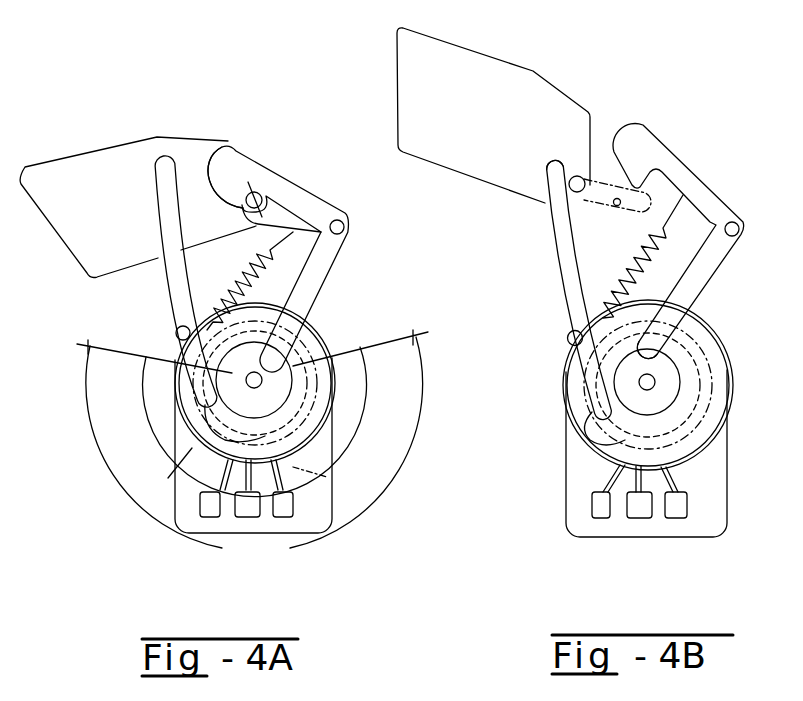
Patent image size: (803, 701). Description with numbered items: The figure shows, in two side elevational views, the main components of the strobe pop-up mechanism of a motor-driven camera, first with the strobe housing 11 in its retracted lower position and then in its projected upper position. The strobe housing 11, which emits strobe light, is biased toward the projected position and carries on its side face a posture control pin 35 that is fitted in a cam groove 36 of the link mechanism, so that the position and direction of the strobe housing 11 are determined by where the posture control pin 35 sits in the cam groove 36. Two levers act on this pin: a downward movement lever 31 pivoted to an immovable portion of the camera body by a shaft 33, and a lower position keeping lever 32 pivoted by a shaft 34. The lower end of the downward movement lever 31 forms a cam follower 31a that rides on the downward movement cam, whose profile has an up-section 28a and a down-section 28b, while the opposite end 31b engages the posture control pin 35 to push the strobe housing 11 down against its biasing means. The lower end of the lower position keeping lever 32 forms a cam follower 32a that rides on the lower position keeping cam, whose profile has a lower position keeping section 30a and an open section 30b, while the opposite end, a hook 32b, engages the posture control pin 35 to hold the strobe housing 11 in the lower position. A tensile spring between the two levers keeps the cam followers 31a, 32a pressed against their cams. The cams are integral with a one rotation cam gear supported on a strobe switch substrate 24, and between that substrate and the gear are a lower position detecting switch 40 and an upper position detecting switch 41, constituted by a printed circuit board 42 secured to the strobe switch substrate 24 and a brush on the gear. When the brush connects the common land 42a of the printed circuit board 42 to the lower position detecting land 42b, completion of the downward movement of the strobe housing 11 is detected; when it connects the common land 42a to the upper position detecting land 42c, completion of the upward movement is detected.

In FIG. 4A, the strobe housing 11 is at (97, 160).
In FIG. 4B, the strobe housing 11 is at (562, 110).
In FIG. 4A, the strobe switch substrate 24 is at (318, 512).
In FIG. 4B, the strobe switch substrate 24 is at (710, 492).
In FIG. 4A, the up-section 28a is at (222, 400).
In FIG. 4A, the down-section 28b is at (360, 376).
In FIG. 4A, the lower position keeping section 30a is at (237, 280).
In FIG. 4A, the open section 30b is at (254, 448).
In FIG. 4A, the downward movement lever 31 is at (167, 215).
In FIG. 4B, the downward movement lever 31 is at (563, 282).
In FIG. 4B, the cam follower 31a is at (580, 425).
In FIG. 4B, the opposite end 31b is at (547, 180).
In FIG. 4A, the lower position keeping lever 32 is at (323, 208).
In FIG. 4B, the lower position keeping lever 32 is at (723, 203).
In FIG. 4B, the cam follower 32a is at (700, 322).
In FIG. 4A, the hook 32b is at (245, 165).
In FIG. 4B, the shaft 33 is at (567, 343).
In FIG. 4B, the shaft 34 is at (740, 237).
In FIG. 4A, the posture control pin 35 is at (268, 192).
In FIG. 4B, the posture control pin 35 is at (590, 175).
In FIG. 4B, the cam groove 36 is at (617, 208).
In FIG. 4A, the lower position detecting switch 40 is at (325, 478).
In FIG. 4B, the upper position detecting switch 41 is at (727, 410).
In FIG. 4B, the printed circuit board 42 is at (658, 542).
In FIG. 4B, the common land 42a is at (598, 518).
In FIG. 4B, the lower position detecting land 42b is at (640, 518).
In FIG. 4B, the upper position detecting land 42c is at (702, 525).